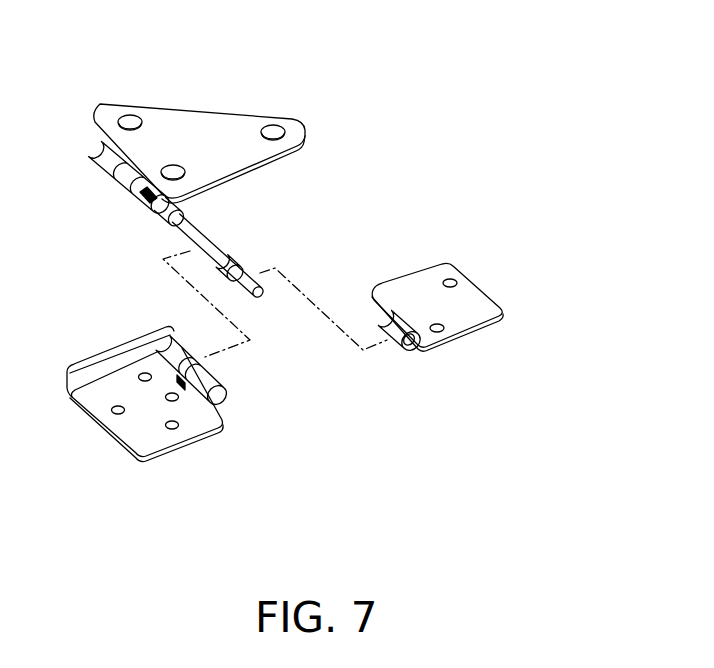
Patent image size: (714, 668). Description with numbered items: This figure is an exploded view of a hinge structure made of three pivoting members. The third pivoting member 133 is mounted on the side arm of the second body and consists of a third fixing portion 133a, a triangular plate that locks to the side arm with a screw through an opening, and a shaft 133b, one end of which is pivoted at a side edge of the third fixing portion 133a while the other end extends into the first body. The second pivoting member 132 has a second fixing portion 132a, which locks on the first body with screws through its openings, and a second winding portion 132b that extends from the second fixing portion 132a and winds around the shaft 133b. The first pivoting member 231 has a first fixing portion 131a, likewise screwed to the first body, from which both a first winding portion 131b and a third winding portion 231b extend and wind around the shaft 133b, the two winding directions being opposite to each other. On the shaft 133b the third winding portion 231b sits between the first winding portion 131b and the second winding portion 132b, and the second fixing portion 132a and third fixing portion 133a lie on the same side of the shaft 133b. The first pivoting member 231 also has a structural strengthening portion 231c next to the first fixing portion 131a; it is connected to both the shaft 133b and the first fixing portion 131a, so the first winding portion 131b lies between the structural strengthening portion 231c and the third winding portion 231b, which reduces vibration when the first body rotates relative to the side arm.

The third pivoting member 133 is at (208, 42).
The third fixing portion 133a is at (192, 122).
The shaft 133b is at (105, 160).
The second pivoting member 132 is at (591, 257).
The second fixing portion 132a is at (477, 297).
The second winding portion 132b is at (400, 322).
The first pivoting member 231 is at (273, 533).
The structural strengthening portion 231c is at (90, 373).
The third winding portion 231b is at (205, 387).
The first fixing portion 131a is at (142, 438).
The first winding portion 131b is at (157, 373).